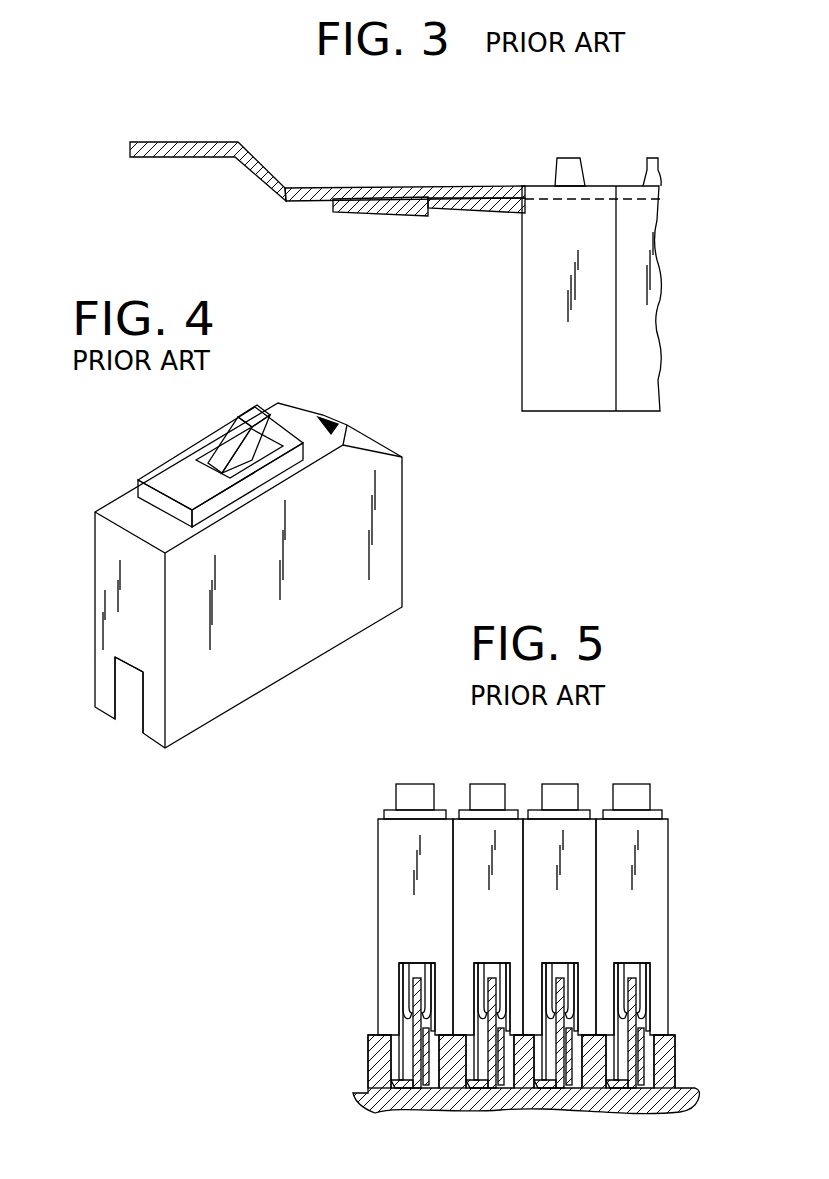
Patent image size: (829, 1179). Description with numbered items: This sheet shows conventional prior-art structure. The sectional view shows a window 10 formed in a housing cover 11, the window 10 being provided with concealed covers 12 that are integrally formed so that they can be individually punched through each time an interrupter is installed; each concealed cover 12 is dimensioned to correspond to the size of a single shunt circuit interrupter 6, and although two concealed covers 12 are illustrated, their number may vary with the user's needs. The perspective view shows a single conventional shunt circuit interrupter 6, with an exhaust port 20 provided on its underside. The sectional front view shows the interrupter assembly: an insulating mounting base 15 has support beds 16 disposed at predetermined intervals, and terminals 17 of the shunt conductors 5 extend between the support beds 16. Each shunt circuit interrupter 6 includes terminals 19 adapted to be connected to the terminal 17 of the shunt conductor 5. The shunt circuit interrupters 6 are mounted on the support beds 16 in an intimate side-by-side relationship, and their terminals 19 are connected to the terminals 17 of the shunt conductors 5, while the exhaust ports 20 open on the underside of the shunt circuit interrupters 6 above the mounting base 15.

In FIG. 5, the shunt conductor 5 is at (412, 1000).
In FIG. 3, the shunt circuit interrupter 6 is at (566, 172).
In FIG. 4, the shunt circuit interrupter 6 is at (378, 553).
In FIG. 5, the shunt circuit interrupter 6 is at (385, 835).
In FIG. 3, the window 10 is at (503, 186).
In FIG. 3, the housing cover 11 is at (182, 148).
In FIG. 3, the concealed cover 12 is at (382, 213).
In FIG. 5, the insulating mounting base 15 is at (685, 1090).
In FIG. 5, the support bed 16 is at (368, 1055).
In FIG. 5, the terminal of the shunt conductor 17 is at (407, 968).
In FIG. 5, the terminal of the shunt circuit interrupter 19 is at (400, 968).
In FIG. 4, the exhaust port 20 is at (128, 682).
In FIG. 5, the exhaust port 20 is at (420, 965).